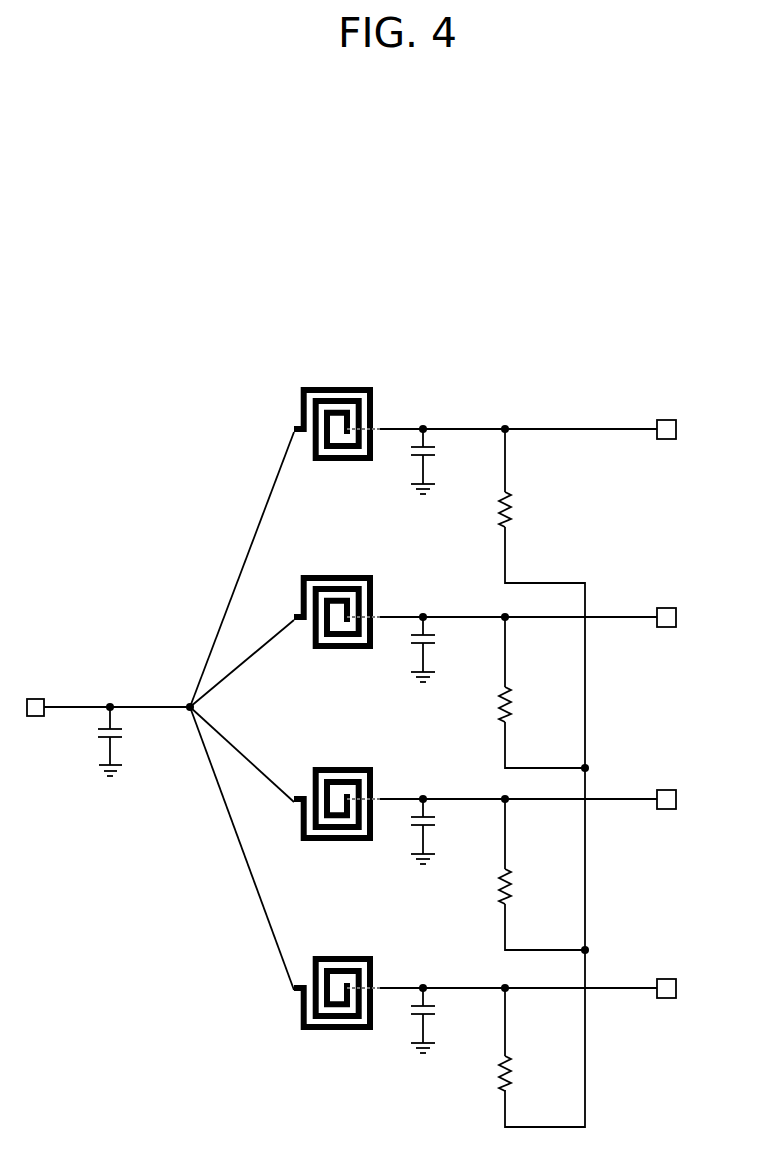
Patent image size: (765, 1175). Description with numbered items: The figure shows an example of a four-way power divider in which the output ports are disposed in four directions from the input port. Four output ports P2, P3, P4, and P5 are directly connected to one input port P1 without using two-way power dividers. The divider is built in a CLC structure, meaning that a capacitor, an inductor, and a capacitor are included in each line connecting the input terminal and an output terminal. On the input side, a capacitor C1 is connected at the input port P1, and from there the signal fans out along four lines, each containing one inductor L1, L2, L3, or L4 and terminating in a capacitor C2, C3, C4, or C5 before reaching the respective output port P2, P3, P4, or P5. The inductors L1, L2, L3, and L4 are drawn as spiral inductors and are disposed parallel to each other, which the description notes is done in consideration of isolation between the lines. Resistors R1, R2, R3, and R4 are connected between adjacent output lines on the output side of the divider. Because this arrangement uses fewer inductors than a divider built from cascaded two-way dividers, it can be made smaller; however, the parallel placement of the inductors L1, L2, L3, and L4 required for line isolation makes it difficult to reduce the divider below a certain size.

The input port P1 is at (35, 723).
The output port P2 is at (687, 430).
The output port P3 is at (687, 618).
The output port P4 is at (687, 800).
The output port P5 is at (687, 989).
The capacitor C1 is at (126, 741).
The capacitor C2 is at (439, 461).
The capacitor C3 is at (439, 649).
The capacitor C4 is at (439, 831).
The capacitor C5 is at (439, 1020).
The inductor L1 is at (337, 403).
The inductor L2 is at (337, 596).
The inductor L3 is at (337, 782).
The inductor L4 is at (337, 971).
The resistor R1 is at (522, 478).
The resistor R2 is at (522, 669).
The resistor R3 is at (522, 851).
The resistor R4 is at (522, 1039).